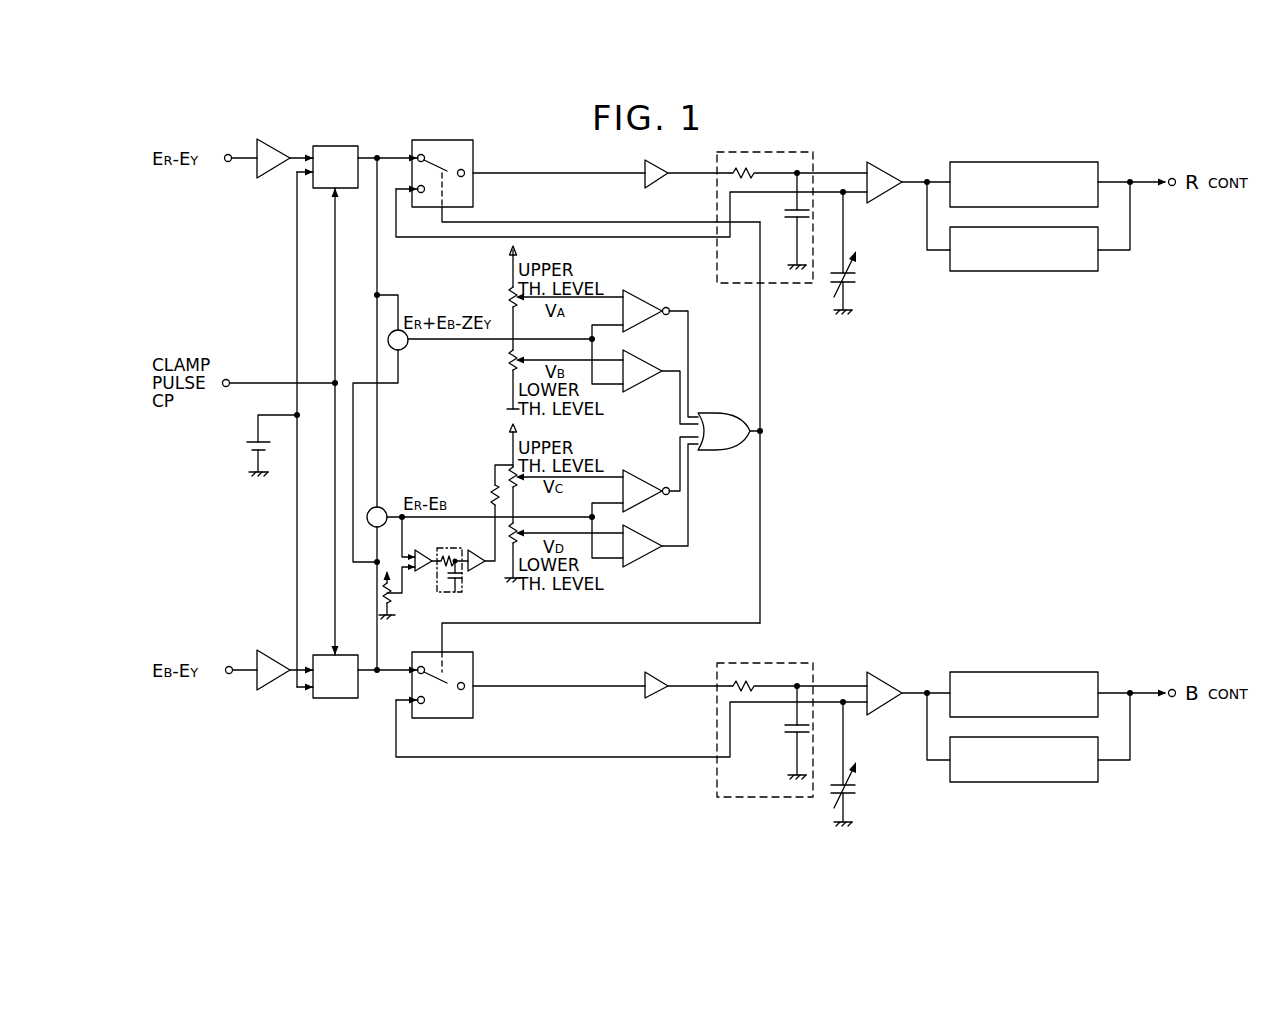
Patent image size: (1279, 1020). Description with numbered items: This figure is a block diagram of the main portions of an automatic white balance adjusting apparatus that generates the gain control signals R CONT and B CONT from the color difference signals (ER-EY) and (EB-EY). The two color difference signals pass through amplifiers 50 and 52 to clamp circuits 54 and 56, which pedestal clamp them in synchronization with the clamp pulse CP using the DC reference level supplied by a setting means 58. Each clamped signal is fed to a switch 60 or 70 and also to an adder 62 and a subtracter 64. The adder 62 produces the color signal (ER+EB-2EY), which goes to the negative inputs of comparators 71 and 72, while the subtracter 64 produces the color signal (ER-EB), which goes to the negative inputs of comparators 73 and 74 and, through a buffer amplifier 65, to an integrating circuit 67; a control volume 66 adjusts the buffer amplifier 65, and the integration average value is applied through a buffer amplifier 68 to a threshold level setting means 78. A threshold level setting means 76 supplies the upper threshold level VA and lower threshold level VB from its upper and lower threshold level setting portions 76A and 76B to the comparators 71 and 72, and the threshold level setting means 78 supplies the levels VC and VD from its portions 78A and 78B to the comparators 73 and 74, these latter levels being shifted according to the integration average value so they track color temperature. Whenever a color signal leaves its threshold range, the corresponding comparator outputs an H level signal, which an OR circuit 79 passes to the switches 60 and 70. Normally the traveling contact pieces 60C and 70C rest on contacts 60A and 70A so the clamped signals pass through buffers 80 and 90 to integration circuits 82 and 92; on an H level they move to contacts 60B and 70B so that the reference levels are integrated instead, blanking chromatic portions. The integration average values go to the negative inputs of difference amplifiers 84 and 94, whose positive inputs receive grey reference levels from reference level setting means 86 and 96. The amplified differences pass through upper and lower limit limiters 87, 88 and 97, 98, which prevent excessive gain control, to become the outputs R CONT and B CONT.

The amplifier 50 is at (267, 178).
The amplifier 52 is at (266, 655).
The clamp circuit 54 is at (345, 188).
The clamp circuit 56 is at (345, 655).
The setting means 58 is at (258, 441).
The switch 60 is at (445, 198).
The contact 60A is at (418, 155).
The contact 60B is at (420, 197).
The traveling contact piece 60C is at (453, 170).
The adder 62 is at (388, 341).
The subtracter 64 is at (383, 508).
The buffer amplifier 65 is at (410, 555).
The control volume 66 is at (395, 603).
The integrating circuit 67 is at (460, 593).
The buffer amplifier 68 is at (478, 573).
The switch 70 is at (460, 685).
The contact 70A is at (420, 664).
The contact 70B is at (422, 706).
The traveling contact piece 70C is at (466, 690).
The comparator 71 is at (648, 293).
The comparator 72 is at (652, 357).
The comparator 73 is at (645, 472).
The comparator 74 is at (652, 531).
The threshold level setting means 76 is at (481, 327).
The upper threshold level setting portion 76A is at (508, 300).
The lower threshold level setting portion 76B is at (508, 364).
The threshold level setting means 78 is at (480, 491).
The upper threshold level setting portion 78A is at (508, 472).
The lower threshold level setting portion 78B is at (508, 535).
The OR circuit 79 is at (712, 413).
The buffer 80 is at (665, 188).
The integration circuit 82 is at (813, 152).
The difference amplifier 84 is at (885, 165).
The reference level setting means 86 is at (858, 272).
The upper limit limiter 87 is at (997, 160).
The lower limit limiter 88 is at (975, 272).
The buffer 90 is at (660, 672).
The integration circuit 92 is at (797, 663).
The difference amplifier 94 is at (880, 672).
The reference level setting means 96 is at (858, 785).
The upper limit limiter 97 is at (985, 670).
The lower limit limiter 98 is at (975, 782).